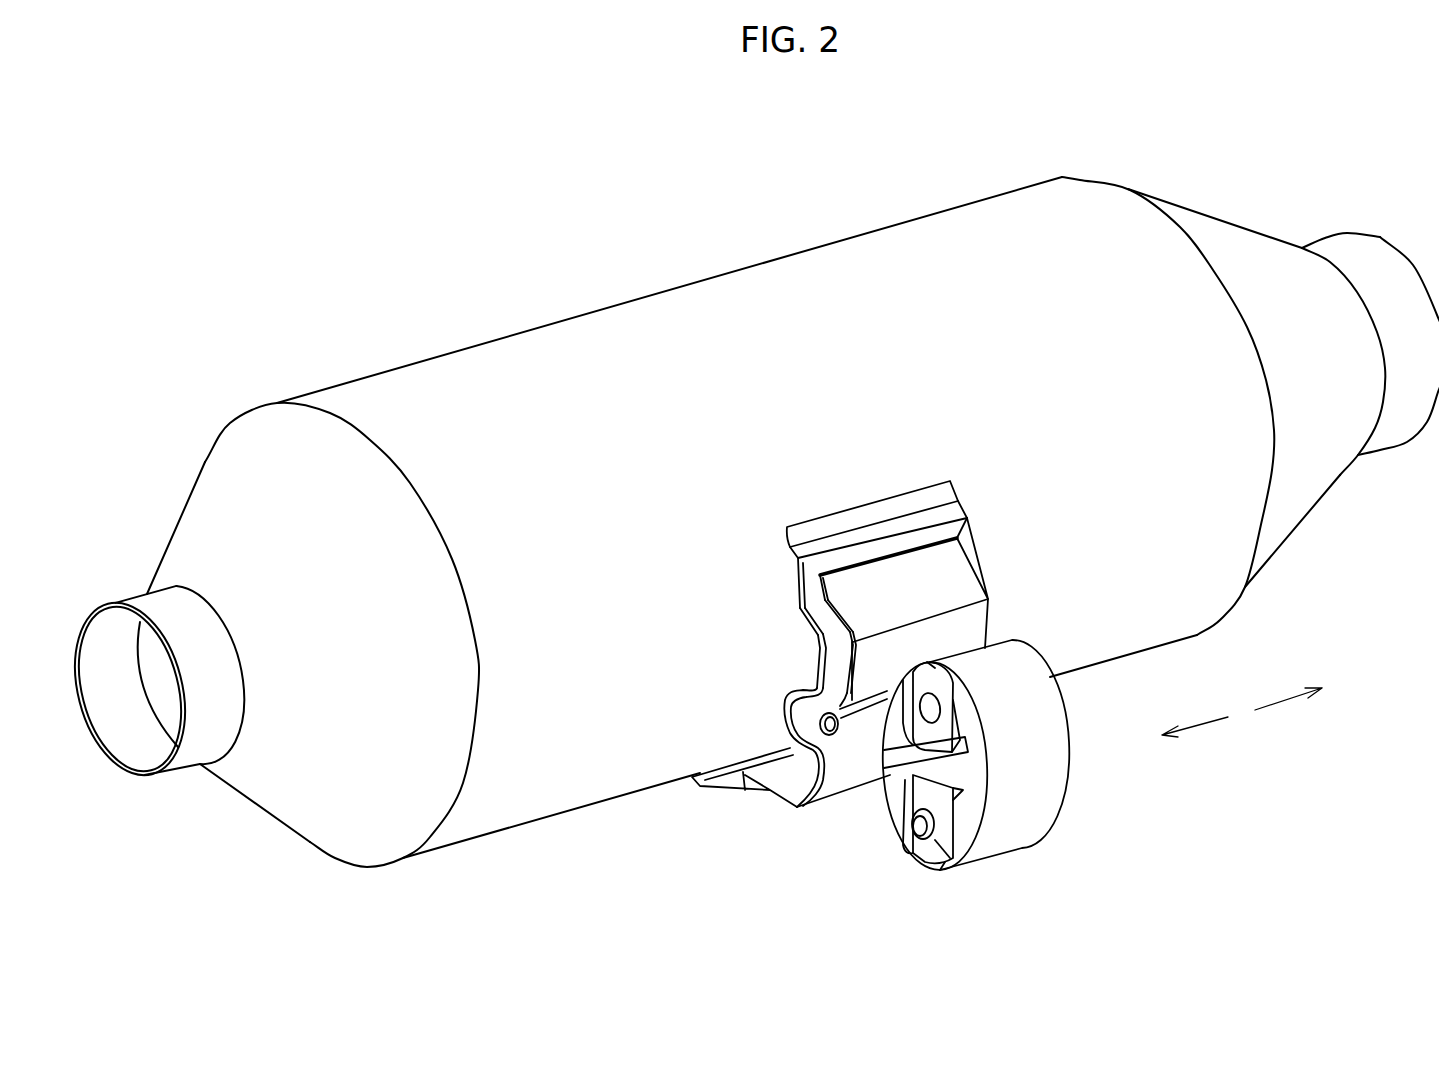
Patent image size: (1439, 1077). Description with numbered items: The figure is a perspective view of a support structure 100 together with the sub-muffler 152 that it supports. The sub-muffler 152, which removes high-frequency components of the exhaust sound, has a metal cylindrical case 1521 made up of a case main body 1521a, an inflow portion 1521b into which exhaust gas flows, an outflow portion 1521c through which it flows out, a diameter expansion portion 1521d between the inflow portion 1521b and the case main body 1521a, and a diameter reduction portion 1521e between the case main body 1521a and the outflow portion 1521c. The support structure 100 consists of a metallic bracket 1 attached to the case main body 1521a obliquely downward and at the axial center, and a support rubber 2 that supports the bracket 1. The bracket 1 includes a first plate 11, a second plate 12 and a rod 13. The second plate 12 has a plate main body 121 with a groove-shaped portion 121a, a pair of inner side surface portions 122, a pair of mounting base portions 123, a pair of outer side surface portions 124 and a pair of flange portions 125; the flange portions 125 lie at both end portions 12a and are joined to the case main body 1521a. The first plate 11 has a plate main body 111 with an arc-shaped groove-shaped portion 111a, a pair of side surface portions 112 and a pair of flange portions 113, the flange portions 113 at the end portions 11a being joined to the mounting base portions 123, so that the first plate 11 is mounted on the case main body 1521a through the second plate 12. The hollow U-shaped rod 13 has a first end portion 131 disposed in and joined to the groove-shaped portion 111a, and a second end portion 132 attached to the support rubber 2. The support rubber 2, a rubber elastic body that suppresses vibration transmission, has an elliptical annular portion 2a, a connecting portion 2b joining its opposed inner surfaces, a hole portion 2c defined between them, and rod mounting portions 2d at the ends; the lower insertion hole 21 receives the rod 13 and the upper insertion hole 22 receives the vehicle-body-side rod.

The support structure 100 is at (1087, 863).
The bracket 1 is at (835, 785).
The first plate 11 is at (867, 773).
The end portions of first plate 11a is at (937, 553).
The plate main body 111 is at (970, 630).
The groove-shaped portion 111a is at (795, 722).
The side surface portions 112 is at (982, 580).
The flange portions 113 is at (973, 544).
The second plate 12 is at (790, 777).
The end portions of second plate 12a is at (903, 507).
The plate main body 121 is at (833, 653).
The groove-shaped portion 121a is at (793, 732).
The inner side surface portions 122 is at (822, 623).
The mounting base portions 123 is at (813, 569).
The outer side surface portions 124 is at (828, 543).
The flange portions 125 is at (865, 512).
The rod 13 is at (843, 693).
The first end portion 131 is at (872, 712).
The second end portion 132 is at (933, 840).
The support rubber 2 is at (1060, 793).
The annular portion 2a is at (967, 843).
The connecting portion 2b is at (920, 762).
The hole portion 2c is at (960, 750).
The rod mounting portion 2d is at (930, 667).
The insertion hole 21 is at (933, 832).
The insertion hole 22 is at (937, 710).
The sub-muffler 152 is at (748, 478).
The case 1521 is at (938, 213).
The case main body 1521a is at (693, 282).
The inflow portion 1521b is at (139, 594).
The outflow portion 1521c is at (1360, 242).
The diameter expansion portion 1521d is at (204, 491).
The diameter reduction portion 1521e is at (1218, 228).